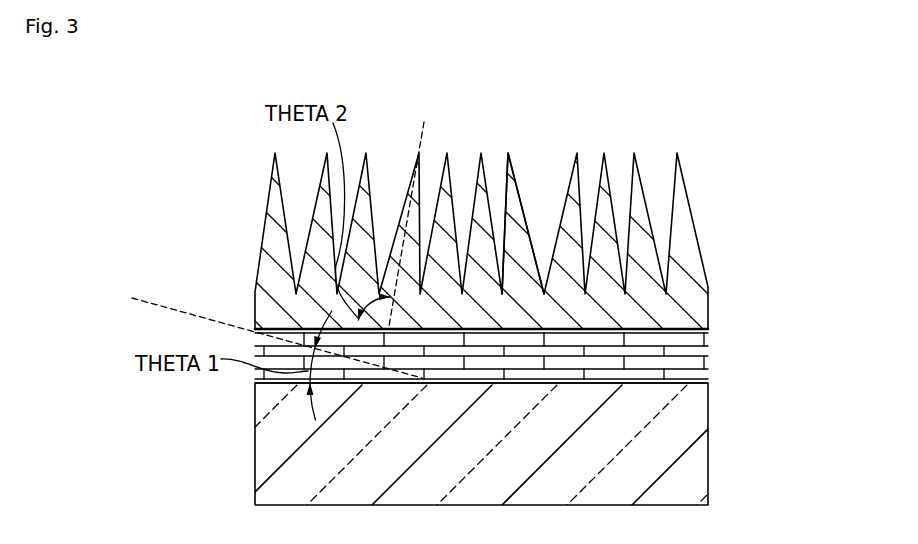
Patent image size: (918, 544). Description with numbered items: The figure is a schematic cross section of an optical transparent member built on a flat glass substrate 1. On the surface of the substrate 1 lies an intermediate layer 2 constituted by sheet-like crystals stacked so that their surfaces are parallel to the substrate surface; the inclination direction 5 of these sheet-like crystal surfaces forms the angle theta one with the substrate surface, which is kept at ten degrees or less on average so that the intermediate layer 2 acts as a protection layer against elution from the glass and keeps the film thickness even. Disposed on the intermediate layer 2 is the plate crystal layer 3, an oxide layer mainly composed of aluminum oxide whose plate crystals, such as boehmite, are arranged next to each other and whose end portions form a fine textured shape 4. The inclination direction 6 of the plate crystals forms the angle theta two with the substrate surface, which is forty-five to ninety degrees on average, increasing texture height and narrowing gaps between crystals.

The substrate 1 is at (700, 445).
The intermediate layer 2 is at (700, 359).
The plate crystal layer 3 is at (700, 308).
The fine textured shape 4 is at (514, 198).
The inclination direction of the sheet-like crystals 5 is at (154, 303).
The inclination direction of the plate crystals 6 is at (421, 141).